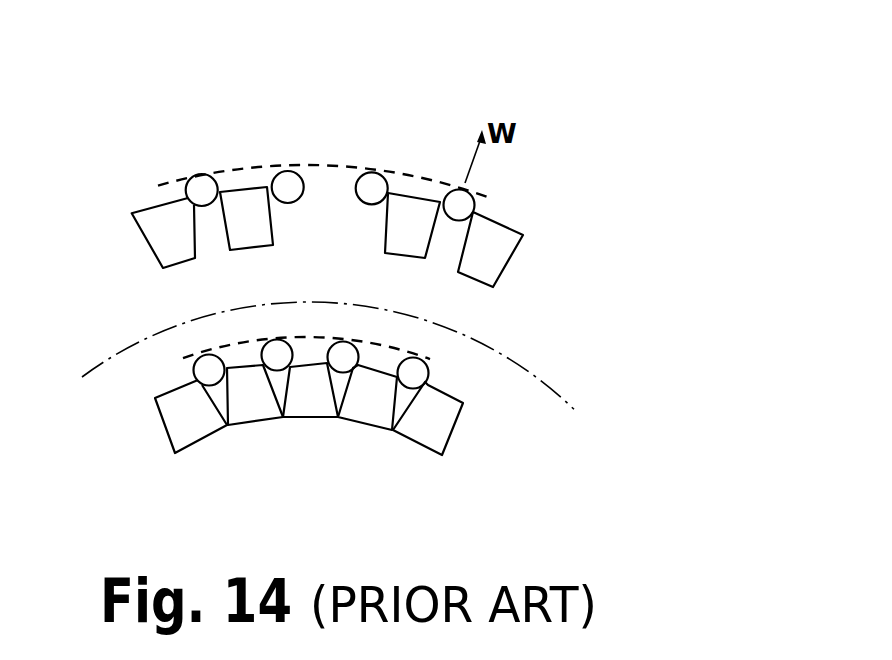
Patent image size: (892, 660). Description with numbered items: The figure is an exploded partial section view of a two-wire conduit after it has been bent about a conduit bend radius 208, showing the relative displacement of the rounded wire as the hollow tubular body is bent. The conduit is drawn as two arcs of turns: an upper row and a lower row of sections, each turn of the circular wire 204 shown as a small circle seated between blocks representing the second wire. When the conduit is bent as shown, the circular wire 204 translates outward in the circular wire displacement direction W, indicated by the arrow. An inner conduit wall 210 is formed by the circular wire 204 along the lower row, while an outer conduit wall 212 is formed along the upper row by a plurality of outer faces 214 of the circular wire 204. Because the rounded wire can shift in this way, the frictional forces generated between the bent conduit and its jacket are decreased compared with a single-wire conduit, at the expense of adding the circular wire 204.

The outer conduit wall 212 is at (185, 182).
The outer faces 214 is at (275, 168).
The circular wire 204 is at (287, 187).
The inner conduit wall 210 is at (447, 360).
The conduit bend radius 208 is at (545, 393).